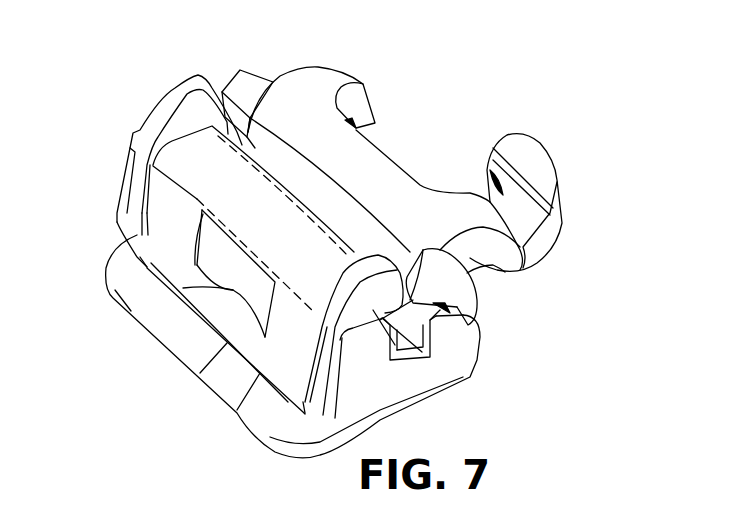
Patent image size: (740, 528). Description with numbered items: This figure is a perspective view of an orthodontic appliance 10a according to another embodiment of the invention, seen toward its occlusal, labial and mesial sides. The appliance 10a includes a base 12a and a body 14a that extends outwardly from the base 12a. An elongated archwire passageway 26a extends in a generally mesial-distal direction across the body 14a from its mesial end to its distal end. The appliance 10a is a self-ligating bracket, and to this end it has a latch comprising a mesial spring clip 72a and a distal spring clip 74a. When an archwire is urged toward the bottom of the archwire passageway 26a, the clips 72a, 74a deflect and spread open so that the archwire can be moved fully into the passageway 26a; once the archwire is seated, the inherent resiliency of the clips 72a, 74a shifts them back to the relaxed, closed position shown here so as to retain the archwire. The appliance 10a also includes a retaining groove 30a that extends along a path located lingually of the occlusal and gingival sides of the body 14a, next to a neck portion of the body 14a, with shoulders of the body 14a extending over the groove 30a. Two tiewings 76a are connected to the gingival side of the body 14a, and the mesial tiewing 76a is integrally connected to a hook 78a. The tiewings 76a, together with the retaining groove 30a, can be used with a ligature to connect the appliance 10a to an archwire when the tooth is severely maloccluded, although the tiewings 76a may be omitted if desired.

The orthodontic appliance 10a is at (571, 252).
The base 12a is at (290, 437).
The body 14a is at (173, 236).
The archwire passageway 26a is at (230, 117).
The retaining groove 30a is at (207, 318).
The mesial spring clip 72a is at (457, 287).
The distal spring clip 74a is at (237, 83).
The tiewings 76a is at (318, 77).
The hook 78a is at (520, 145).